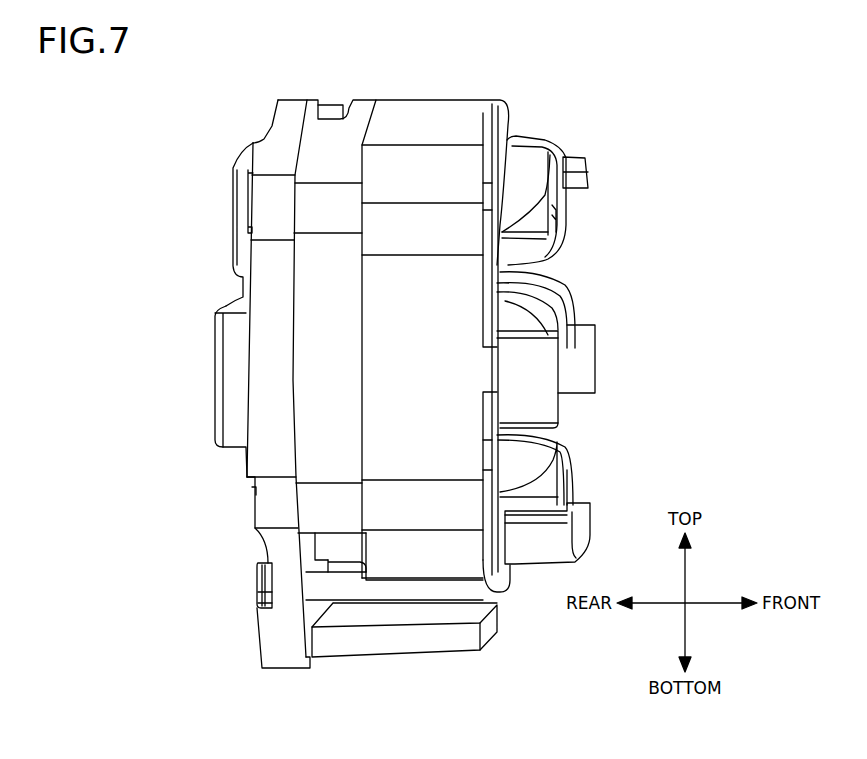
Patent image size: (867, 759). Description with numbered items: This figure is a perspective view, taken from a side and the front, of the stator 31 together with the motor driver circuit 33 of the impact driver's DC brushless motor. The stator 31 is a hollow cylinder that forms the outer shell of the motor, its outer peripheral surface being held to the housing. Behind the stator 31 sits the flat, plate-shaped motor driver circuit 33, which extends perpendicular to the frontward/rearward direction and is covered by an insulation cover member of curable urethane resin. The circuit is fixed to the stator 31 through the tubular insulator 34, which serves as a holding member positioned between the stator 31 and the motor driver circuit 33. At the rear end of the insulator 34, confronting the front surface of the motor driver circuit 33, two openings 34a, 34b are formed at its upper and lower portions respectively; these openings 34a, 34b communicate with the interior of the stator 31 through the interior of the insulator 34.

The stator 31 is at (453, 322).
The motor driver circuit 33 is at (267, 410).
The insulator 34 is at (330, 288).
The opening 34a is at (330, 103).
The opening 34b is at (350, 566).